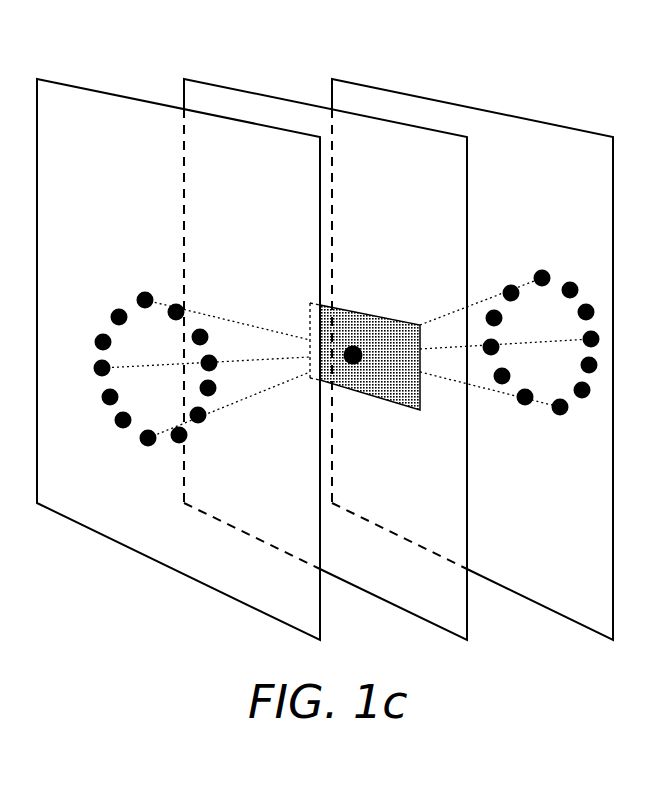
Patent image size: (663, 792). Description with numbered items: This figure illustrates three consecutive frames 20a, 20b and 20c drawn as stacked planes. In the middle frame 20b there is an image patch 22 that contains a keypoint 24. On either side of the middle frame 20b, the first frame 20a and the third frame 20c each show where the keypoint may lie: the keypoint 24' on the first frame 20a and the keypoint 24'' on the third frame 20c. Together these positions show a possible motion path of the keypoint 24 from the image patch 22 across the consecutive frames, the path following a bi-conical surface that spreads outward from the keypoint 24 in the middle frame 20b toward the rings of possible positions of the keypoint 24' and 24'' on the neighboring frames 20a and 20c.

The first frame 20a is at (68, 82).
The middle frame 20b is at (215, 82).
The third frame 20c is at (362, 82).
The image patch 22 is at (387, 402).
The keypoint 24 is at (362, 318).
The keypoint on first frame 24' is at (202, 362).
The keypoint on third frame 24'' is at (510, 359).